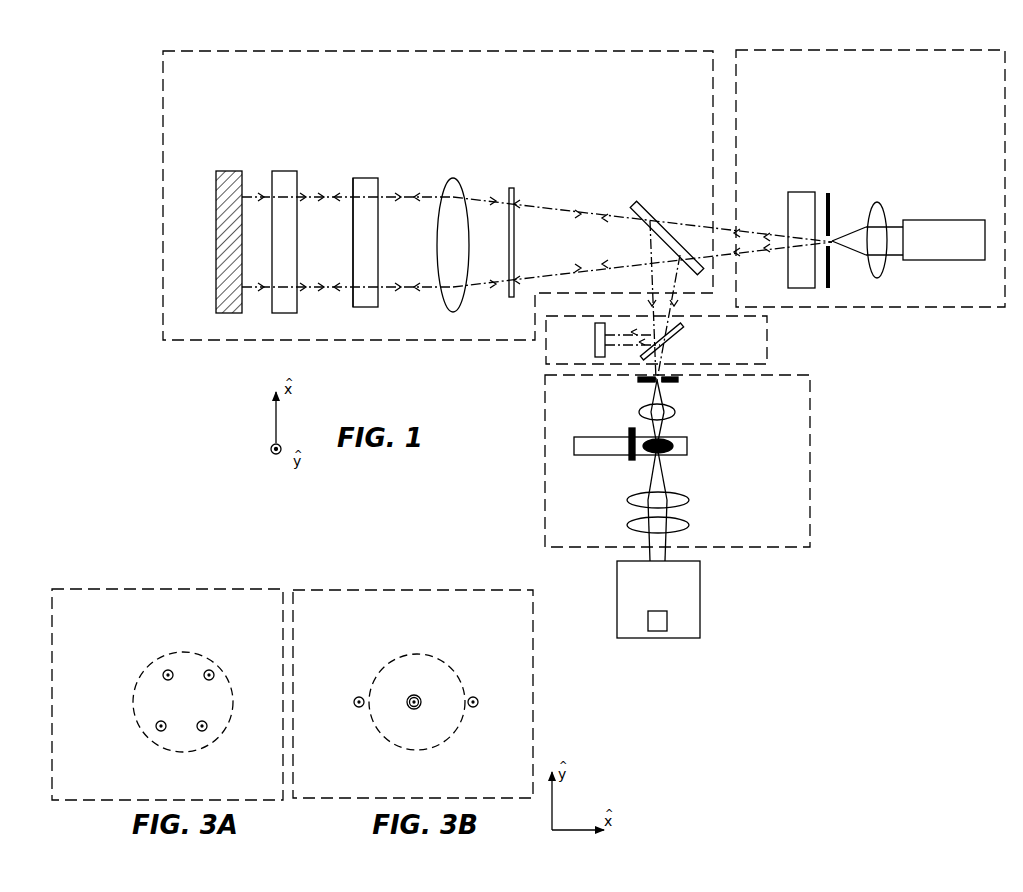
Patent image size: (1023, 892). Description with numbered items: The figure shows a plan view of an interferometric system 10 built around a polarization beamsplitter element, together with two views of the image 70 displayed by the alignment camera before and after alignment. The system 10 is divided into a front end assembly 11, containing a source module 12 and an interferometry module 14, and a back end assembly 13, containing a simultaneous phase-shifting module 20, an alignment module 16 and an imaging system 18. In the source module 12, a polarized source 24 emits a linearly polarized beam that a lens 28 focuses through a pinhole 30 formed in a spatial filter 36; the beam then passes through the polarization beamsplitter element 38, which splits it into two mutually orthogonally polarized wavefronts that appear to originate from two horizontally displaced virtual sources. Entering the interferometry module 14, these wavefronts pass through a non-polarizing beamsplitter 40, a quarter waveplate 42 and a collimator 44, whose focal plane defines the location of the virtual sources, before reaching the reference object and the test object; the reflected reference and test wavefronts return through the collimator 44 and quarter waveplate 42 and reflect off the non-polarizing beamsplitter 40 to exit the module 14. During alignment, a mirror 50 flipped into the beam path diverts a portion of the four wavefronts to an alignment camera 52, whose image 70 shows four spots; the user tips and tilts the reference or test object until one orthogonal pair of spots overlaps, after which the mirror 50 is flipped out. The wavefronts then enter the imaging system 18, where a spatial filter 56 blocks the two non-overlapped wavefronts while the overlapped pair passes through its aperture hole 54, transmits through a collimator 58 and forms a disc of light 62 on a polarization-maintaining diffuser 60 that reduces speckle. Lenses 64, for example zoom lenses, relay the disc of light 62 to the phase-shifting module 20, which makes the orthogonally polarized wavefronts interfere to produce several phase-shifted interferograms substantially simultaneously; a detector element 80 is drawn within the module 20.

In FIG. 1, the interferometric system 10 is at (451, 406).
In FIG. 1, the front end assembly 11 is at (755, 50).
In FIG. 1, the source module 12 is at (950, 310).
In FIG. 1, the back end assembly 13 is at (800, 595).
In FIG. 1, the interferometry module 14 is at (160, 78).
In FIG. 1, the alignment module 16 is at (770, 344).
In FIG. 1, the imaging system 18 is at (812, 491).
In FIG. 1, the simultaneous phase-shifting module 20 is at (703, 577).
In FIG. 1, the polarized source 24 is at (962, 220).
In FIG. 1, the lens 28 is at (882, 205).
In FIG. 1, the pinhole 30 is at (848, 236).
In FIG. 1, the spatial filter 36 is at (827, 190).
In FIG. 1, the polarization beamsplitter element 38 is at (800, 190).
In FIG. 1, the non-polarizing beamsplitter 40 is at (642, 200).
In FIG. 1, the quarter waveplate 42 is at (513, 188).
In FIG. 1, the collimator 44 is at (445, 178).
In FIG. 1, the mirror 50 is at (688, 330).
In FIG. 1, the alignment camera 52 is at (593, 347).
In FIG. 1, the aperture hole 54 is at (650, 387).
In FIG. 3A, the aperture hole 54 is at (140, 744).
In FIG. 3B, the aperture hole 54 is at (378, 738).
In FIG. 1, the spatial filter 56 is at (680, 384).
In FIG. 1, the collimator 58 is at (690, 416).
In FIG. 1, the diffuser 60 is at (695, 451).
In FIG. 1, the disc of light 62 is at (680, 452).
In FIG. 1, the lenses 64 is at (622, 504).
In FIG. 3A, the image 70 is at (185, 588).
In FIG. 3B, the image 70 is at (410, 588).
In FIG. 1, the detector element 80 is at (670, 623).